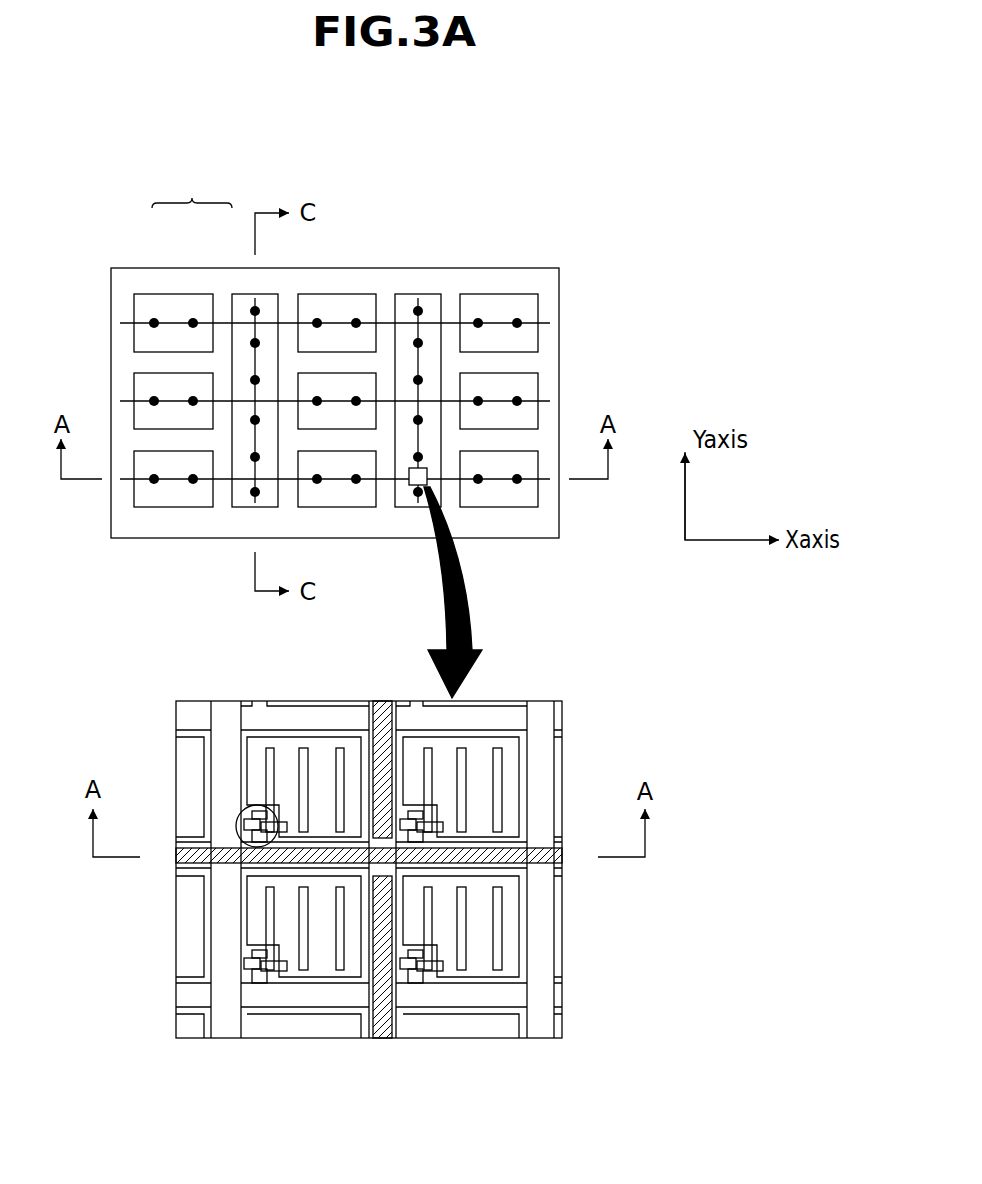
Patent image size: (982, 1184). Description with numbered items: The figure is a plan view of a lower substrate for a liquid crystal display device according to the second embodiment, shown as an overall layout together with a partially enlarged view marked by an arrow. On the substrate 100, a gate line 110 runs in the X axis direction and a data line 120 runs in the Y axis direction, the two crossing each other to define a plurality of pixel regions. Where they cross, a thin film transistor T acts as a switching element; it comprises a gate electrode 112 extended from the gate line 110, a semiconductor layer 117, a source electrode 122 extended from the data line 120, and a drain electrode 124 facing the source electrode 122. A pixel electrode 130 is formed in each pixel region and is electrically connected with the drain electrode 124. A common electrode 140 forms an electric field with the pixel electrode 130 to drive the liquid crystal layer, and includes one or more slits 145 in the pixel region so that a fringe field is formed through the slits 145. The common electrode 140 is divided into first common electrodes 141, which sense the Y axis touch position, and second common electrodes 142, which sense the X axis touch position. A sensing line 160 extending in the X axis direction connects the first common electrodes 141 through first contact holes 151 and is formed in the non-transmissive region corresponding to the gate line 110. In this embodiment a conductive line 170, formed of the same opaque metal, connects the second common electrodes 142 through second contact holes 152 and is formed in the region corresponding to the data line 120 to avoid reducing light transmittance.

The substrate 100 is at (562, 292).
The gate line 110 is at (478, 1007).
The gate electrode 112 is at (257, 846).
The semiconductor layer 117 is at (247, 795).
The data line 120 is at (211, 955).
The source electrode 122 is at (243, 822).
The drain electrode 124 is at (260, 811).
The pixel electrode 130 is at (285, 822).
The common electrode 140 is at (562, 748).
The first common electrode 141 is at (153, 294).
The second common electrode 142 is at (240, 294).
The slit 145 is at (338, 747).
The first contact hole 151 is at (151, 319).
The second contact hole 152 is at (420, 308).
The sensing line 160 is at (385, 322).
The conductive line 170 is at (254, 360).
The thin film transistor T is at (243, 831).